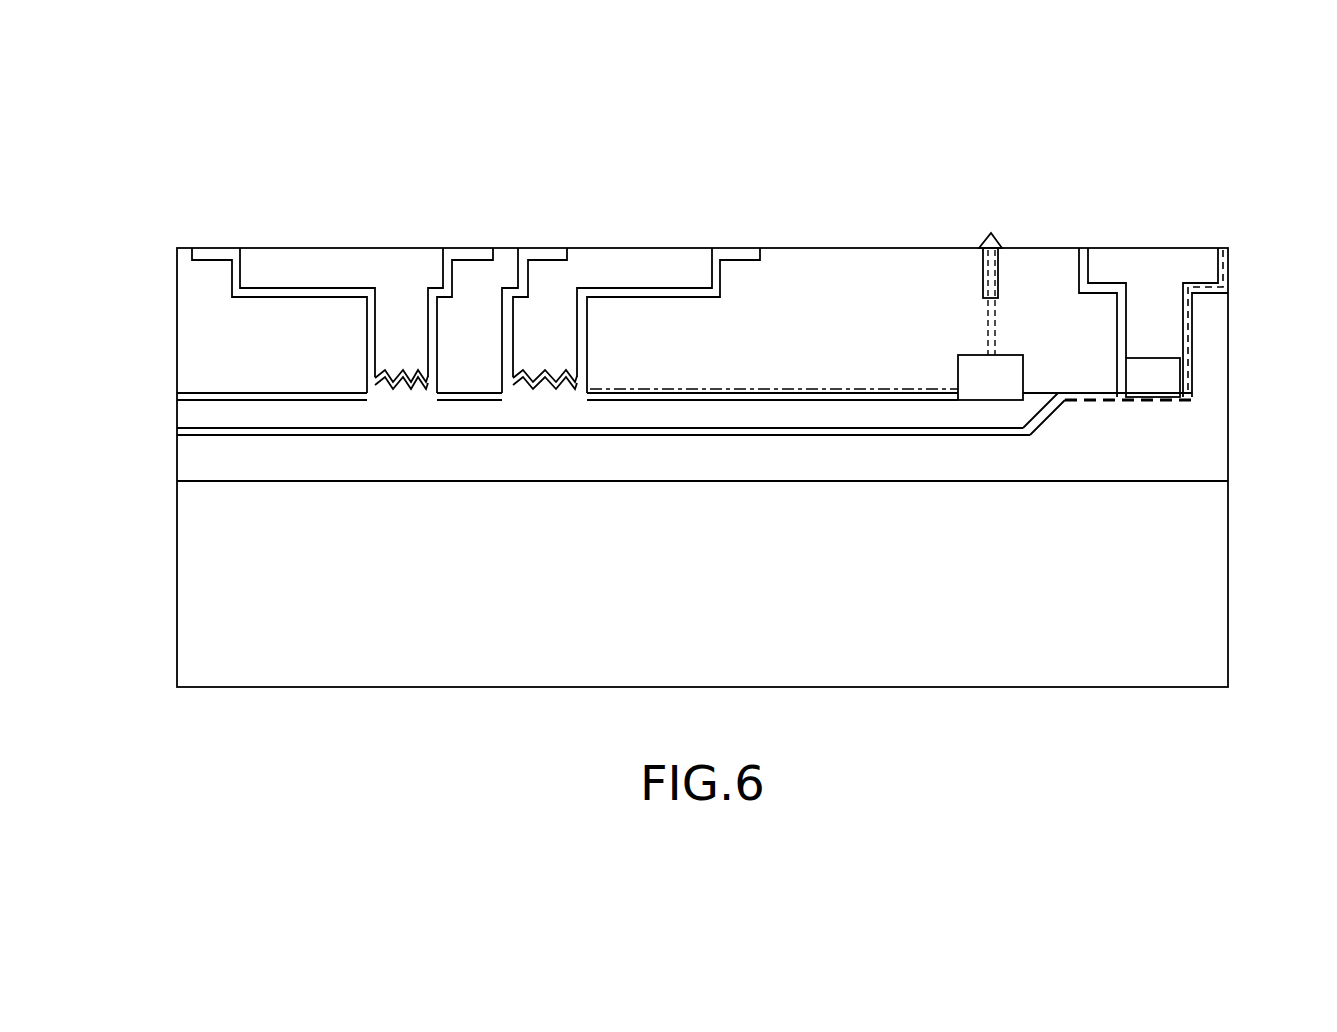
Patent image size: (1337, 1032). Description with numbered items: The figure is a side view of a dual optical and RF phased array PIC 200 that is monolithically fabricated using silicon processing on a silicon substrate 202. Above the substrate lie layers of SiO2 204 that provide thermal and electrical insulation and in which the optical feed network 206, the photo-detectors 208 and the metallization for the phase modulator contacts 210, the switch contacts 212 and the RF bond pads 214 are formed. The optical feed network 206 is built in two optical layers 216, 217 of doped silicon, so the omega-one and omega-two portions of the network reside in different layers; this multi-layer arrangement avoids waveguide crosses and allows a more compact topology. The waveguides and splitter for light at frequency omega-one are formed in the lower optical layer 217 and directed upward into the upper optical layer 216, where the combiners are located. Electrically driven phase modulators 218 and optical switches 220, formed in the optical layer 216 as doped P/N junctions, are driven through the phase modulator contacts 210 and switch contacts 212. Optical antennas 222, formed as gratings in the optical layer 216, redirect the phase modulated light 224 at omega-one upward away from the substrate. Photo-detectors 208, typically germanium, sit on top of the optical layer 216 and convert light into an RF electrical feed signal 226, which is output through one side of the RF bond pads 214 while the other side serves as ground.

The dual optical and RF phased array PIC 200 is at (1252, 70).
The silicon substrate 202 is at (1205, 556).
The layers of SiO2 204 is at (828, 346).
The optical feed network 206 is at (382, 452).
The photo-detectors 208 is at (1120, 373).
The metallization for phase modulator contacts 210 is at (464, 240).
The switch contacts 212 is at (719, 243).
The RF bond pads 214 is at (1200, 246).
The optical layer 216 is at (173, 378).
The optical layer 217 is at (173, 418).
The phase modulators 218 is at (396, 352).
The optical switches 220 is at (543, 352).
The optical antennas 222 is at (957, 372).
The light 224 is at (978, 245).
The electrical feed signal 226 is at (1236, 284).